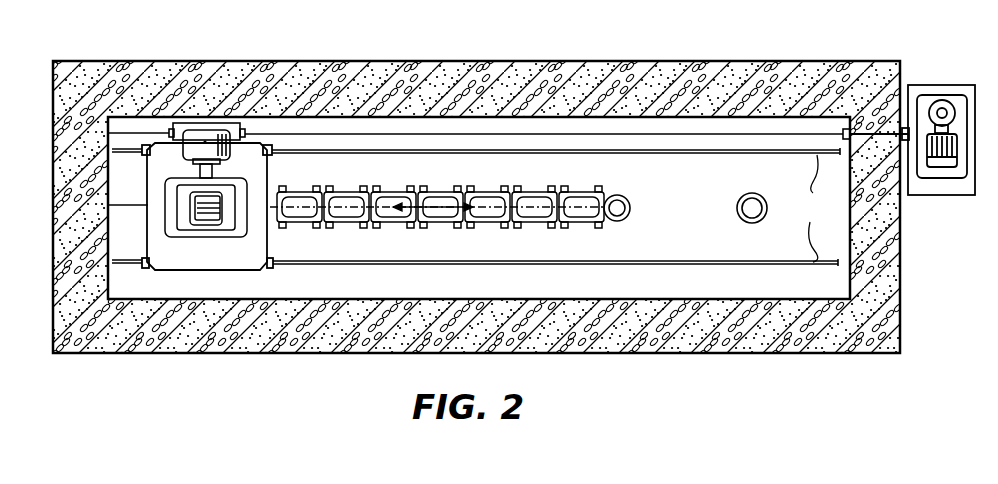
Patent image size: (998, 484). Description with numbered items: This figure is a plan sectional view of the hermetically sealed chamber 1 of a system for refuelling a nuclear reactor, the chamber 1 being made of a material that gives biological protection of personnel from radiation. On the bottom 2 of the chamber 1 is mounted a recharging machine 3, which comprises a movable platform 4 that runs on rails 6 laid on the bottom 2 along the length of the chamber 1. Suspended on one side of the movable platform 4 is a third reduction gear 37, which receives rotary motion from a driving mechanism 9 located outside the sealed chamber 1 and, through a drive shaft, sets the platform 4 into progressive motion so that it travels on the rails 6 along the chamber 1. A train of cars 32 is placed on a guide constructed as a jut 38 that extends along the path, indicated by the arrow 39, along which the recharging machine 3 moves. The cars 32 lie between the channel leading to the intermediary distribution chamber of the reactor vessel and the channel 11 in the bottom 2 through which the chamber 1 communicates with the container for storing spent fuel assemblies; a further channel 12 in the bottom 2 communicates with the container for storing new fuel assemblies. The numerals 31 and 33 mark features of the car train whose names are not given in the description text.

The hermetically sealed chamber 1 is at (347, 63).
The bottom 2 is at (388, 160).
The recharging machine 3 is at (256, 135).
The movable platform 4 is at (172, 250).
The rails 6 is at (476, 207).
The driving mechanism 9 is at (927, 102).
The channel 11 is at (622, 200).
The channel 12 is at (746, 204).
The chain link tabs 31 is at (365, 230).
The cars 32 is at (518, 203).
The chain link joint 33 is at (497, 200).
The third reduction gear 37 is at (195, 148).
The jut 38 is at (121, 204).
The arrow 39 is at (433, 210).